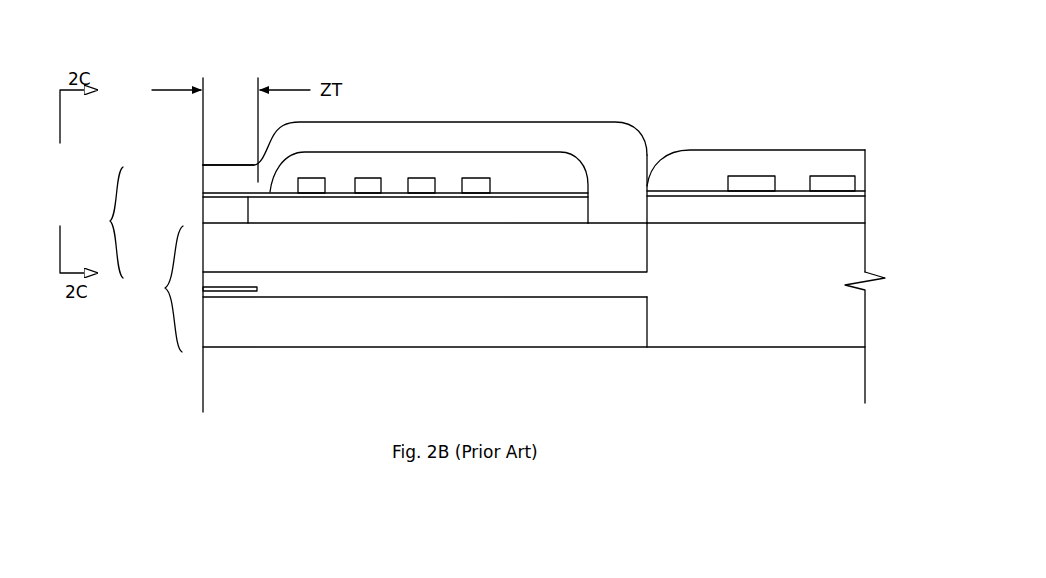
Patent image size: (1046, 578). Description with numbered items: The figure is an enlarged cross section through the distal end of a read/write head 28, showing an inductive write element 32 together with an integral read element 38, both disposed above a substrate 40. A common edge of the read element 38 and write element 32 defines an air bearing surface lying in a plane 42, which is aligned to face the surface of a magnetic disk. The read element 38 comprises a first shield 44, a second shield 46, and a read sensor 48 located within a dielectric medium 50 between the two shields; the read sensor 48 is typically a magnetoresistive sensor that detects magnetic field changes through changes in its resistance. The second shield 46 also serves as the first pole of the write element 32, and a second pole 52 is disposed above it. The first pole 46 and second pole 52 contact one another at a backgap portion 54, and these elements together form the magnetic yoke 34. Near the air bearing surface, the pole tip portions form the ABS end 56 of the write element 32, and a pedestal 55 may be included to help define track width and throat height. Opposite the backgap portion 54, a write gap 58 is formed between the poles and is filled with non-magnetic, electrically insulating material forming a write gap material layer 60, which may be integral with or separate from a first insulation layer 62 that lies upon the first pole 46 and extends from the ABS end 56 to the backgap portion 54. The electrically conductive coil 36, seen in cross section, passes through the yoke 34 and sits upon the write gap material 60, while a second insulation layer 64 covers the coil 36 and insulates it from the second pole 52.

The head 28 is at (102, 346).
The write element 32 is at (102, 222).
The magnetic yoke 34 is at (652, 145).
The electrically conductive coil 36 is at (368, 178).
The read element 38 is at (160, 289).
The substrate 40 is at (303, 386).
The plane 42 is at (203, 140).
The first shield 44 is at (421, 335).
The second shield 46 is at (421, 260).
The read sensor 48 is at (222, 292).
The dielectric medium 50 is at (295, 288).
The second pole 52 is at (443, 138).
The backgap portion 54 is at (603, 157).
The pedestal 55 is at (213, 214).
The ABS end 56 is at (221, 183).
The write gap 58 is at (203, 197).
The write gap material layer 60 is at (338, 207).
The first insulation layer 62 is at (557, 212).
The second insulation layer 64 is at (530, 178).